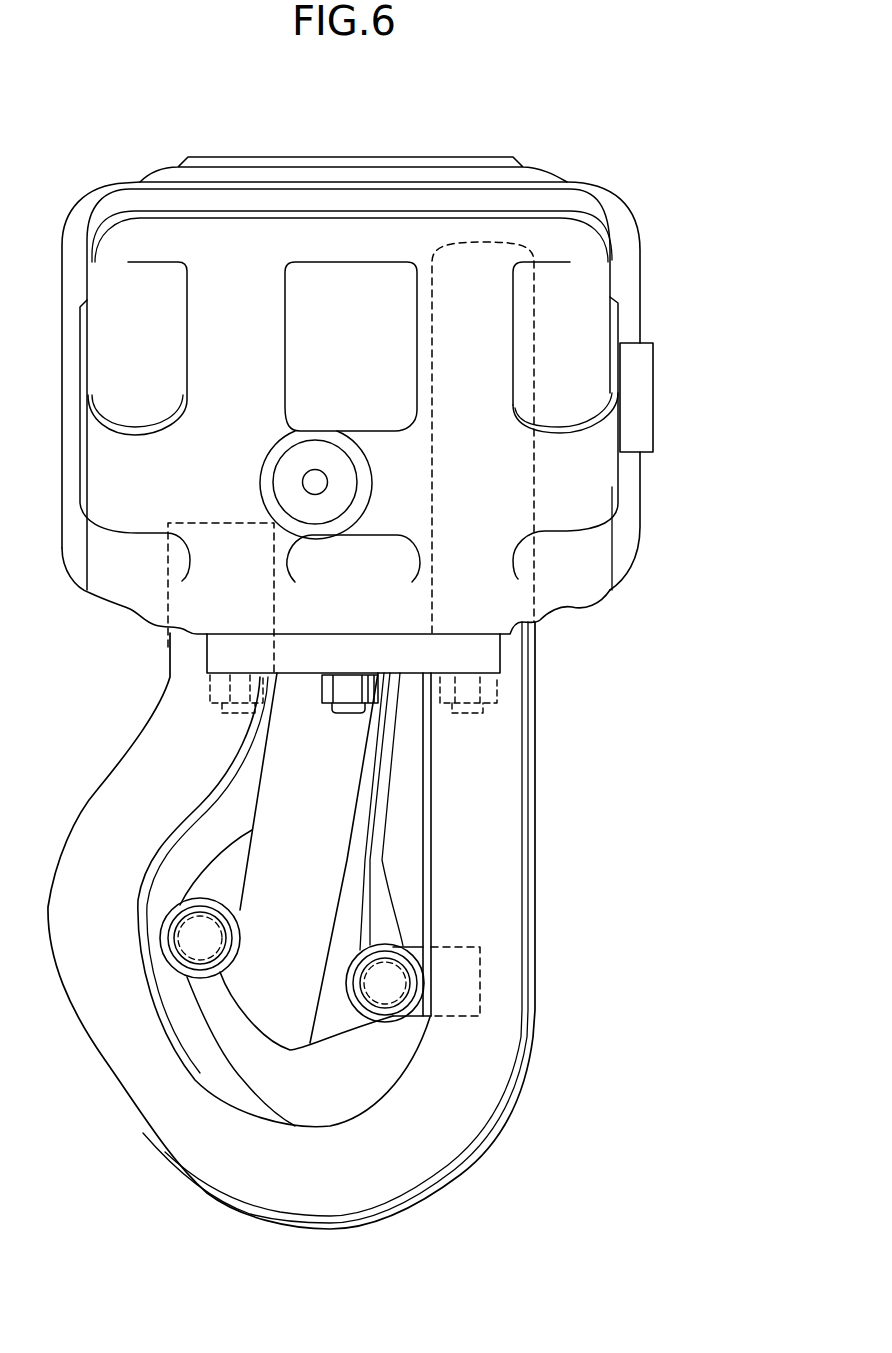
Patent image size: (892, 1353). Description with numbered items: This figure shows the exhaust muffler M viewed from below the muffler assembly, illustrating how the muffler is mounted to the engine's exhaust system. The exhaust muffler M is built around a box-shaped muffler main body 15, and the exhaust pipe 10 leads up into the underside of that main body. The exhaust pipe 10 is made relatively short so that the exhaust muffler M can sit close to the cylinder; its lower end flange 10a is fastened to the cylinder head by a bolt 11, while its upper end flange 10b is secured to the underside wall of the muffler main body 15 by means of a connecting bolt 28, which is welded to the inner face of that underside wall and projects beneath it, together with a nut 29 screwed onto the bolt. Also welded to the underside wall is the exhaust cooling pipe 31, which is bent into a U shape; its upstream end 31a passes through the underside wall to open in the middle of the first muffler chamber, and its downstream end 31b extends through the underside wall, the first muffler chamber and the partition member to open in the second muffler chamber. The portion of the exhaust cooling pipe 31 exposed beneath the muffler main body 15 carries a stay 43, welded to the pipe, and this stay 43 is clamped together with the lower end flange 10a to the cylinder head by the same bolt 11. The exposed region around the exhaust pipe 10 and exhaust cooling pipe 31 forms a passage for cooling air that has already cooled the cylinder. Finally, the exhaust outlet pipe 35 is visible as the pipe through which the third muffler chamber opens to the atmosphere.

The exhaust muffler M is at (540, 168).
The muffler main body 15 is at (643, 275).
The exhaust outlet pipe 35 is at (645, 397).
The downstream end 31b is at (437, 260).
The upstream end 31a is at (213, 521).
The upper end flange 10b is at (357, 655).
The nut 29 is at (330, 692).
The connecting bolt 28 is at (350, 707).
The exhaust pipe 10 is at (316, 893).
The lower end flange 10a is at (210, 977).
The bolt 11 is at (187, 938).
The stay 43 is at (453, 947).
The exhaust cooling pipe 31 is at (316, 1187).